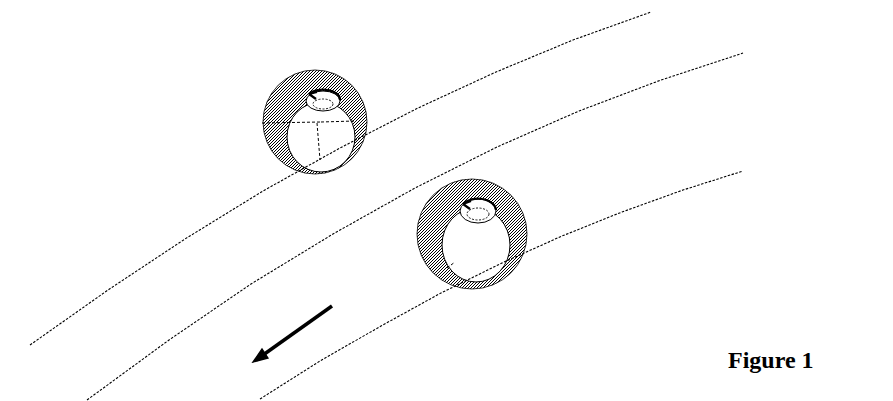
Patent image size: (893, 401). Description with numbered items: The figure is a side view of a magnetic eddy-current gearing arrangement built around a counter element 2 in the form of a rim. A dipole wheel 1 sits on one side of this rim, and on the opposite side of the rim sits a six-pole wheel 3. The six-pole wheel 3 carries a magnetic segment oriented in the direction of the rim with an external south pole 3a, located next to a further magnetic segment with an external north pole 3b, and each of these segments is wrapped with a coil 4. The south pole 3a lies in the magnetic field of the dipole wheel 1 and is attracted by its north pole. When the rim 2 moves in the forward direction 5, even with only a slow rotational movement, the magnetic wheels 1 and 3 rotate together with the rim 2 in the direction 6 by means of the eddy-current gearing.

The dipole wheel 1 is at (480, 267).
The counter element 2 is at (240, 220).
The 6-pole wheel 3 is at (407, 158).
The external south pole 3a is at (365, 130).
The external north pole 3b is at (268, 125).
The coil 4 is at (300, 68).
The forward direction 5 is at (310, 337).
The direction 6 is at (332, 82).